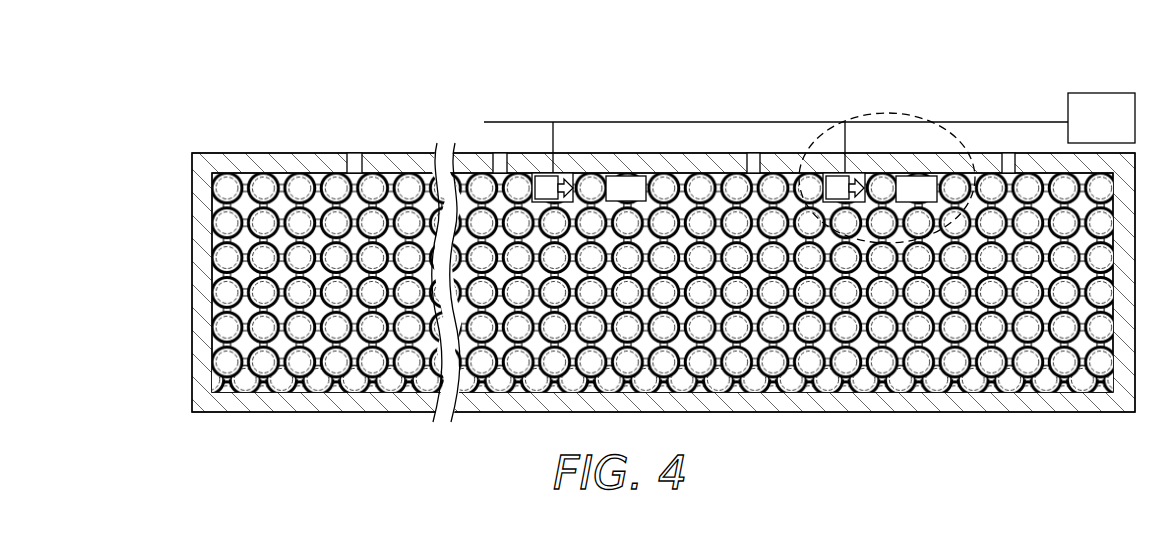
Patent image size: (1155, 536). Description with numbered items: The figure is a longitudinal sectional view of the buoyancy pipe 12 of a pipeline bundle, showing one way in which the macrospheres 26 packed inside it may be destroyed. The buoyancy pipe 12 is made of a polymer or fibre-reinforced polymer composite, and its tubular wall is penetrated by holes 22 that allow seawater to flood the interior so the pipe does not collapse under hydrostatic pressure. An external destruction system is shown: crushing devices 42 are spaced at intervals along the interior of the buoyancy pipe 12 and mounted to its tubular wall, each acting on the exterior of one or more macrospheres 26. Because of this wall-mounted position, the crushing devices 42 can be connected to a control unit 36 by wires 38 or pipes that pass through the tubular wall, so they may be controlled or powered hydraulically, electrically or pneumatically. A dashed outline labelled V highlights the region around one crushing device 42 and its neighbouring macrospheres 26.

The buoyancy pipe 12 is at (167, 137).
The holes 22 is at (352, 153).
The macrospheres 26 is at (223, 226).
The control unit 36 is at (1100, 104).
The wires 38 is at (641, 122).
The crushing devices 42 is at (545, 136).
The detection volume V is at (956, 130).